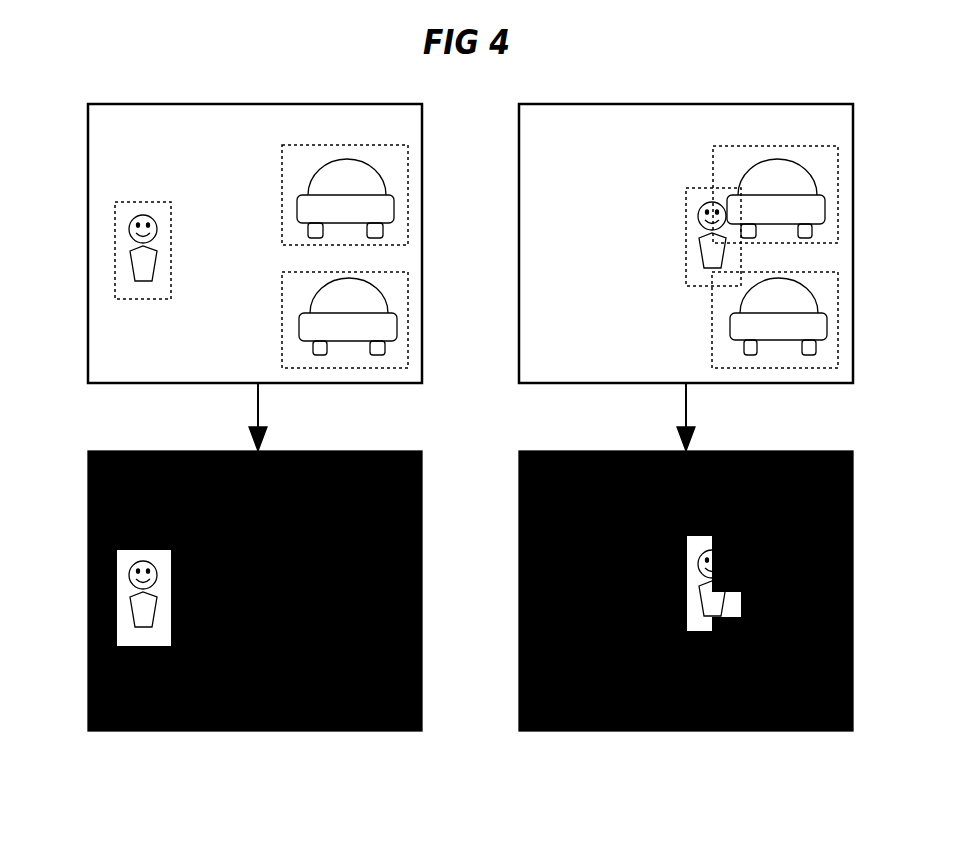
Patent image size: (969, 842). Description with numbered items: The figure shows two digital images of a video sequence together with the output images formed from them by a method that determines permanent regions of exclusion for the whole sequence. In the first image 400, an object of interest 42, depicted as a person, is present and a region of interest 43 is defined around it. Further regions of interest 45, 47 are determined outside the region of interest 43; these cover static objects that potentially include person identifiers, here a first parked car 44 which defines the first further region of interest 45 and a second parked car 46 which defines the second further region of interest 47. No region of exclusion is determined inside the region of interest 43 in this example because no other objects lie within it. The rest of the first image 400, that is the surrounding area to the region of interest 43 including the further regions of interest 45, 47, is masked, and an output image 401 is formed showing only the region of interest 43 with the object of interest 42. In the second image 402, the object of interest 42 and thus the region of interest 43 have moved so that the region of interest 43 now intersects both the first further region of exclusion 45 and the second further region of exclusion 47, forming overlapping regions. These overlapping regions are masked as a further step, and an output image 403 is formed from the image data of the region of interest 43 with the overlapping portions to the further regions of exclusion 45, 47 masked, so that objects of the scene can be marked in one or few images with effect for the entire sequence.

The object of interest 42 is at (142, 262).
The region of interest 43 is at (128, 213).
The first parked car 44 is at (363, 183).
The first further region of interest 45 is at (302, 172).
The second parked car 46 is at (348, 325).
The second further region of interest 47 is at (388, 289).
The first image 400 is at (423, 242).
The output image 401 is at (340, 745).
The second image 402 is at (854, 242).
The output image 403 is at (770, 745).